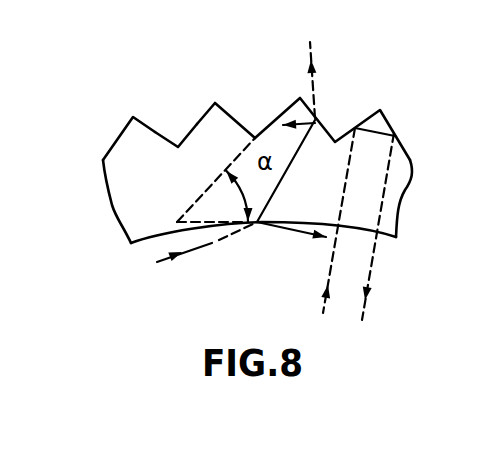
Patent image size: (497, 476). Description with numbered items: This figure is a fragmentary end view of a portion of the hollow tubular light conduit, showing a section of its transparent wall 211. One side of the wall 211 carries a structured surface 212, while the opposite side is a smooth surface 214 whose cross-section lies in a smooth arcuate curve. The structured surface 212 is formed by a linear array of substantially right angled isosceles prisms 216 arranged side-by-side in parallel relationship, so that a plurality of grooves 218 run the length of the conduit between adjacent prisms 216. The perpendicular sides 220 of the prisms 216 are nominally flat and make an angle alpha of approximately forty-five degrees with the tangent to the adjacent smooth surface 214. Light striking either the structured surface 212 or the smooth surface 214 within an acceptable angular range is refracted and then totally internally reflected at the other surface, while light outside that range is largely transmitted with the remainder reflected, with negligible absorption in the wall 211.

The wall 211 is at (125, 208).
The structured surface 212 is at (297, 101).
The smooth surface 214 is at (140, 245).
The right angled isosceles prisms 216 is at (231, 117).
The grooves 218 is at (177, 145).
The perpendicular sides 220 is at (140, 117).